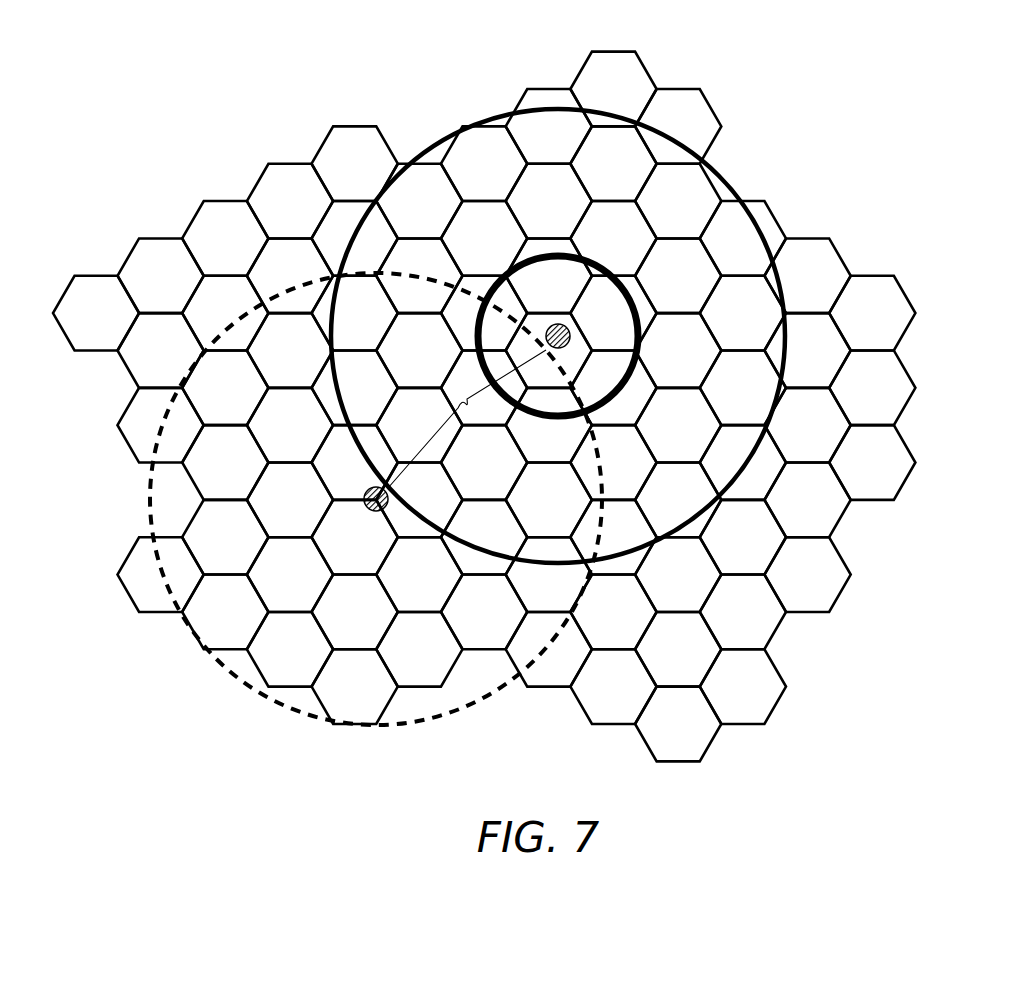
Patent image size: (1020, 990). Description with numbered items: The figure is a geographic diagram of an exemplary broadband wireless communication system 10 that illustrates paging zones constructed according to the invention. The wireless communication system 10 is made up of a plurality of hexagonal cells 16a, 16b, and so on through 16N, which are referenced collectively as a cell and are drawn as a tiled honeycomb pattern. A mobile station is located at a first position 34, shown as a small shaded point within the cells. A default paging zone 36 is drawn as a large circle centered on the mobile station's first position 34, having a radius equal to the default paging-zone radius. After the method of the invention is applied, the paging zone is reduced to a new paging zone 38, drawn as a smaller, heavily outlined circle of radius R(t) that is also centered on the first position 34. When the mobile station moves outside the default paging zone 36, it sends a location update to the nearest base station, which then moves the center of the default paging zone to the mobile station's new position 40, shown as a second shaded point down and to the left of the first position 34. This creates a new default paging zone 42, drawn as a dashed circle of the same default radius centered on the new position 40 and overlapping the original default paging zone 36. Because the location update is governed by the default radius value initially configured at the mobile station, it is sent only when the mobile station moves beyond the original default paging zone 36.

The wireless communication system 10 is at (799, 48).
The cell 16a is at (334, 126).
The cell 16b is at (204, 200).
The cell 16N is at (829, 614).
The first position 34 is at (565, 322).
The default paging zone 36 is at (722, 172).
The new paging zone 38 is at (583, 256).
The new position 40 is at (373, 513).
The new default paging zone 42 is at (478, 706).